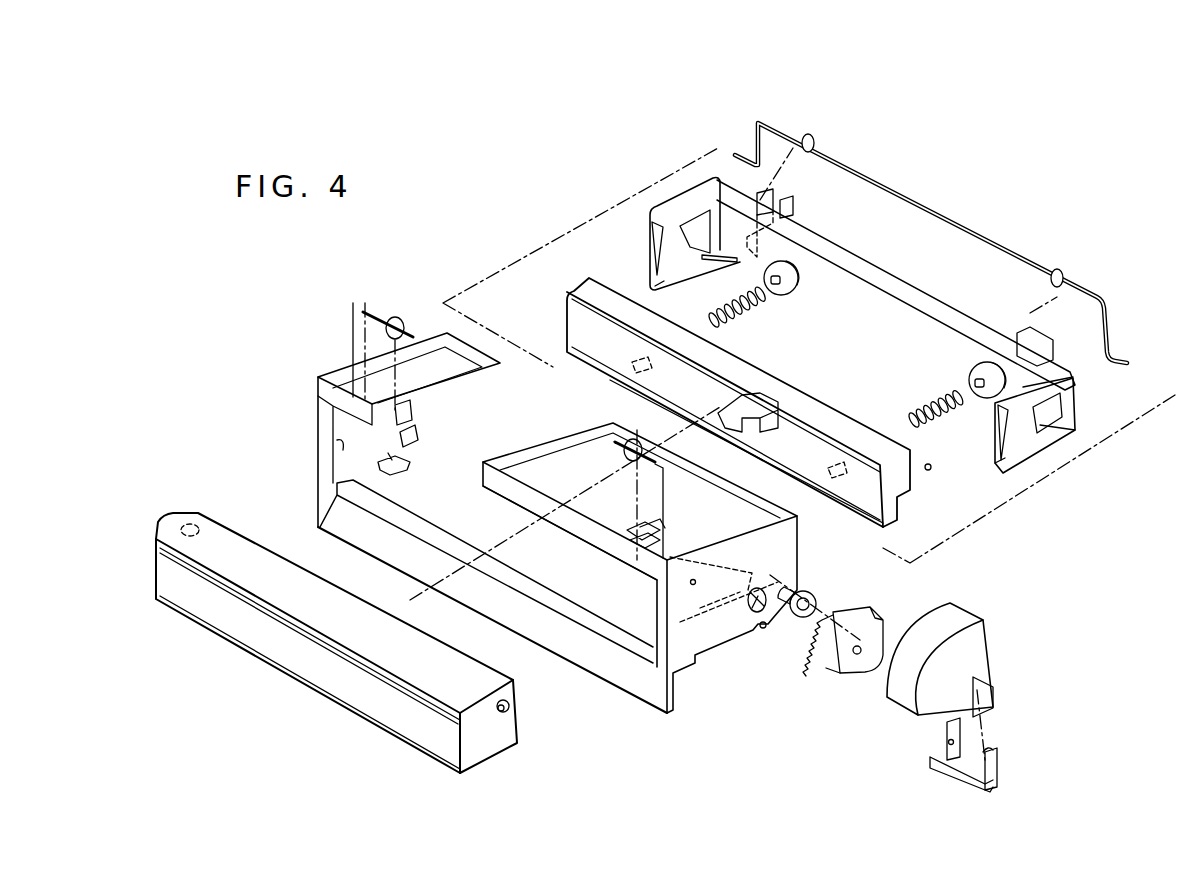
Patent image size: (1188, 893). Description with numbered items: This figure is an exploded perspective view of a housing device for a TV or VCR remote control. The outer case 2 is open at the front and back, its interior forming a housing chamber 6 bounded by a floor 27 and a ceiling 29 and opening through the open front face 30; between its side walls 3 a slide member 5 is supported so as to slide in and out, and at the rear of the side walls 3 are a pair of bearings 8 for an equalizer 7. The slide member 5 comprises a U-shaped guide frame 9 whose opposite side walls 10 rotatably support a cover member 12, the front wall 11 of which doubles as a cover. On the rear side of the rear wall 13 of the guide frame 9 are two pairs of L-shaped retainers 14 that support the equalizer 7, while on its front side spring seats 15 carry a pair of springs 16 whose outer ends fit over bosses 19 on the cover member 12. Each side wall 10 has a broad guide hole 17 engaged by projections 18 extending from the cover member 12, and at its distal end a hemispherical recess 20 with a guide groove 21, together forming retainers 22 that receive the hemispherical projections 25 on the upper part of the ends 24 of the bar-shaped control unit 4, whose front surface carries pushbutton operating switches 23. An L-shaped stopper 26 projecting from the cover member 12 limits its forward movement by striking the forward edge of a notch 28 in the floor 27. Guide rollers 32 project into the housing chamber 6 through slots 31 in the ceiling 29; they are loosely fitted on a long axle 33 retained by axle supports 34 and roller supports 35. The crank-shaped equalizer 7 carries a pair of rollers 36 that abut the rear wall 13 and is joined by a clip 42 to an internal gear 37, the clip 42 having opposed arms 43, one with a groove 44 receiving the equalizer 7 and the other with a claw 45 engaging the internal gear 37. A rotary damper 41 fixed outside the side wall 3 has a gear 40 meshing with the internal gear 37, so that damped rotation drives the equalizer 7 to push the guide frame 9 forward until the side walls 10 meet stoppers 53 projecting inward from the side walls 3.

The outer case 2 is at (547, 481).
The side walls 3 is at (338, 362).
The control unit 4 is at (344, 607).
The slide member 5 is at (809, 346).
The housing chamber 6 is at (523, 429).
The equalizer 7 is at (931, 243).
The bearings 8 is at (810, 592).
The guide frame 9 is at (864, 320).
The side walls 10 is at (668, 205).
The front wall 11 is at (803, 481).
The cover member 12 is at (700, 363).
The rear wall 13 is at (880, 325).
The L-shaped retainers 14 is at (780, 203).
The spring seats 15 is at (790, 295).
The springs 16 is at (747, 307).
The guide hole 17 is at (702, 237).
The projections 18 is at (928, 472).
The bosses 19 is at (640, 368).
The hemispherical recess 20 is at (653, 232).
The guide groove 21 is at (655, 265).
The retainers 22 is at (591, 240).
The pushbutton operating switches 23 is at (300, 667).
The ends 24 is at (160, 545).
The hemispherical projections 25 is at (190, 522).
The L-shaped stopper 26 is at (773, 387).
The floor 27 is at (583, 592).
The notch 28 is at (533, 558).
The ceiling 29 is at (687, 470).
The open front face 30 is at (452, 522).
The slots 31 is at (405, 440).
The guide rollers 32 is at (400, 320).
The axle 33 is at (365, 310).
The axle supports 34 is at (398, 420).
The roller supports 35 is at (410, 470).
The rollers 36 is at (815, 143).
The internal gear 37 is at (975, 645).
The gear 40 is at (820, 647).
The rotary damper 41 is at (857, 665).
The clip 42 is at (965, 753).
The arms 43 is at (930, 733).
The groove 44 is at (948, 743).
The claw 45 is at (990, 752).
The stoppers 53 is at (333, 442).